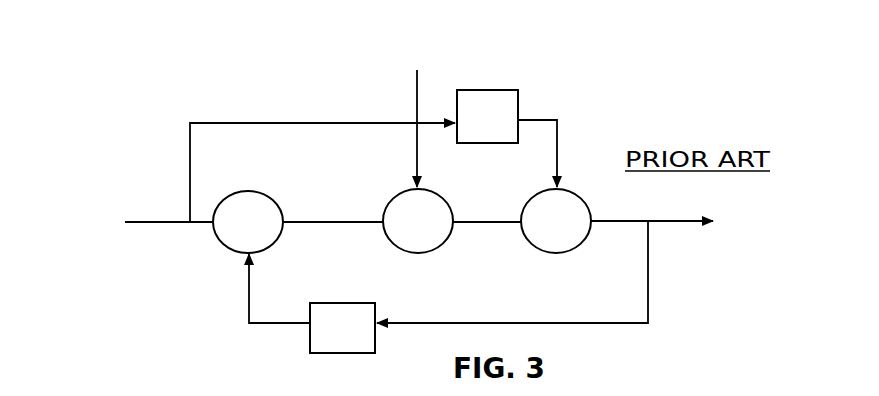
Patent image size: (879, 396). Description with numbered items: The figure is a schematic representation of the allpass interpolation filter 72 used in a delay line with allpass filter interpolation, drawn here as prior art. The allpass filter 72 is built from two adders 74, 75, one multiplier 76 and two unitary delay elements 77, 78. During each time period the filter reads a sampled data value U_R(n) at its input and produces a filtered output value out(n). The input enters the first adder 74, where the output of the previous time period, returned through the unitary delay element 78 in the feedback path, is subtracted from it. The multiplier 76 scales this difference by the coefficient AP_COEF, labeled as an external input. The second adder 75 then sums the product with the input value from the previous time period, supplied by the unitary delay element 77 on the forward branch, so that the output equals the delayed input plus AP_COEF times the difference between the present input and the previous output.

The allpass interpolation filter 72 is at (186, 104).
The adder 74 is at (277, 238).
The adder 75 is at (585, 238).
The multiplier 76 is at (447, 238).
The unitary delay element 77 is at (519, 100).
The unitary delay element 78 is at (375, 343).